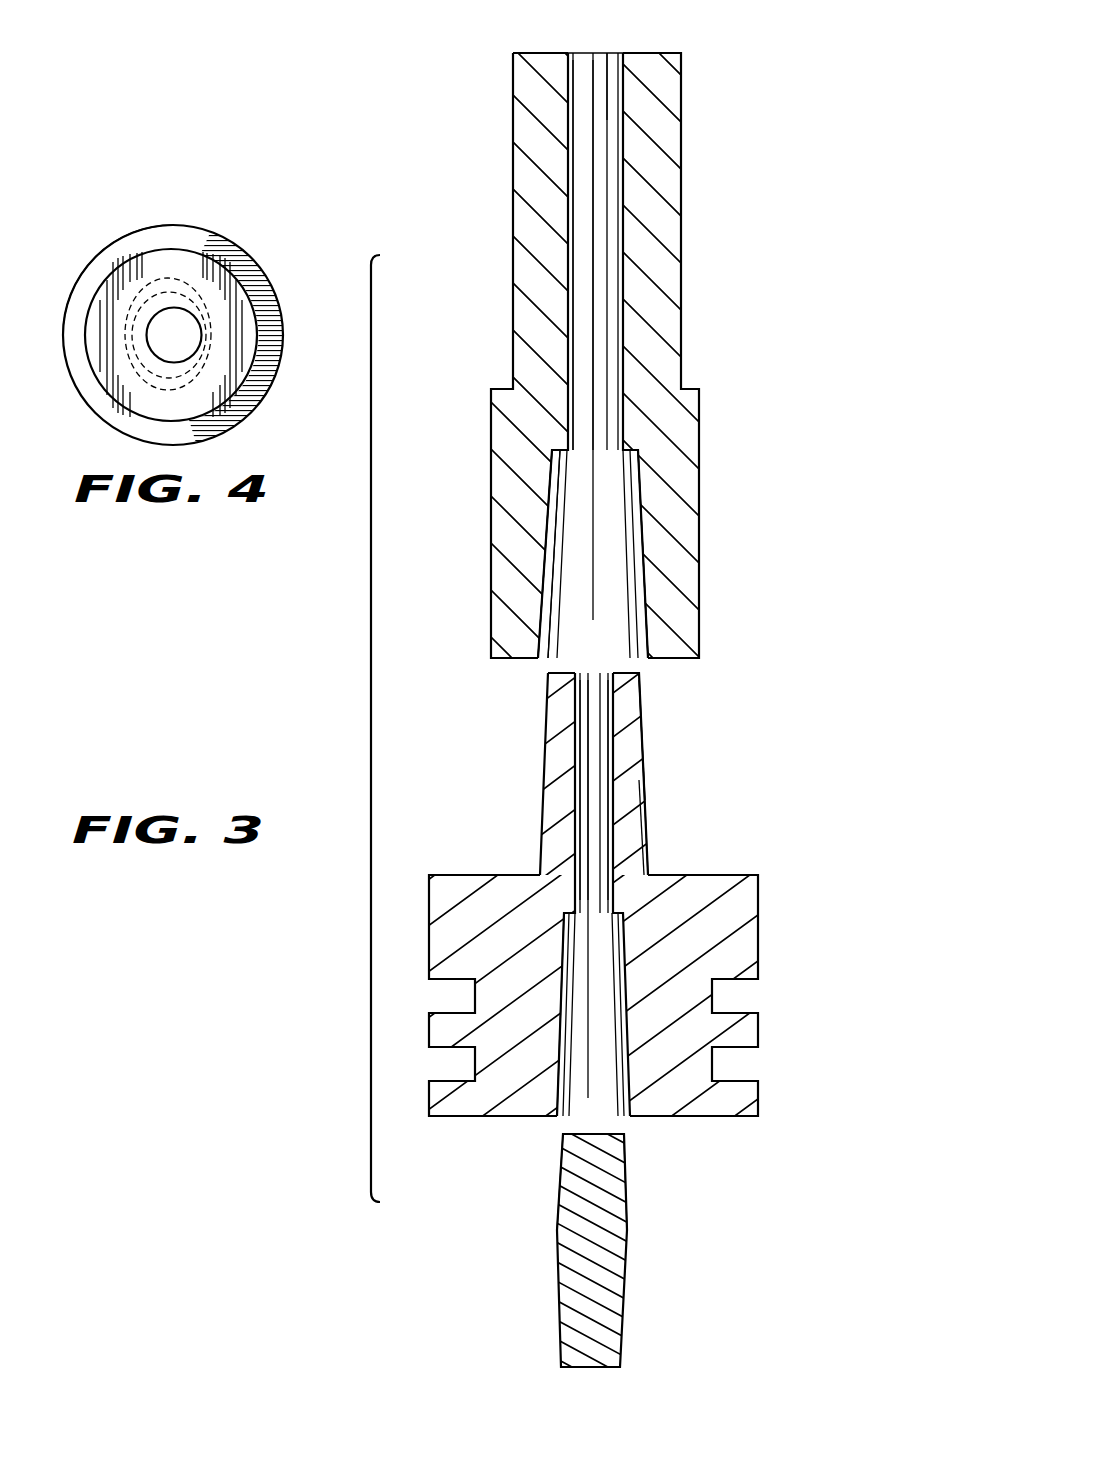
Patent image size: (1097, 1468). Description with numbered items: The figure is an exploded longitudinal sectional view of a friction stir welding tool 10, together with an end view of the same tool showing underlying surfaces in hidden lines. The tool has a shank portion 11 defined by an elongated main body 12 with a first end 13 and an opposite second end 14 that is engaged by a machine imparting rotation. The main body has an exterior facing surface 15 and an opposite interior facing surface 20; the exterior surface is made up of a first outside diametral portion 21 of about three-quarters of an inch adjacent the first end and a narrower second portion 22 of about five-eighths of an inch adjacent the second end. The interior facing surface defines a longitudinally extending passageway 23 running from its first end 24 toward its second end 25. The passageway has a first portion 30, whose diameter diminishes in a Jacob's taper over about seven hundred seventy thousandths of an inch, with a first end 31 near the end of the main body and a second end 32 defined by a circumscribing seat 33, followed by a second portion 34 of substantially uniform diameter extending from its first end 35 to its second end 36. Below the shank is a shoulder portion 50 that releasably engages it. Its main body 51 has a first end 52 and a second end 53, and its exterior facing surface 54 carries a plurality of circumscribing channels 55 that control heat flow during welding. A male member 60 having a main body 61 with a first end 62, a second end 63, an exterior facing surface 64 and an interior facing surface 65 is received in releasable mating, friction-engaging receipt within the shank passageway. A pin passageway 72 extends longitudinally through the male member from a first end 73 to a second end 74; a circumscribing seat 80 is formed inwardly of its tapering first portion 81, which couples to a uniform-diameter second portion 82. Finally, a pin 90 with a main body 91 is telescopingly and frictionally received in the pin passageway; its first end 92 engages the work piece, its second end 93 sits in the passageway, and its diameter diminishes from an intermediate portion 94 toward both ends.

In FIG. 3, the friction stir welding tool 10 is at (371, 728).
In FIG. 4, the friction stir welding tool 10 is at (200, 133).
In FIG. 3, the shank portion 11 is at (706, 312).
In FIG. 4, the shank portion 11 is at (172, 292).
In FIG. 3, the main body 12 is at (668, 232).
In FIG. 3, the first end 13 is at (690, 662).
In FIG. 3, the second end 14 is at (650, 53).
In FIG. 3, the exterior facing surface 15 is at (680, 372).
In FIG. 3, the interior facing surface 20 is at (578, 300).
In FIG. 3, the first outside diametral portion 21 is at (491, 468).
In FIG. 4, the first outside diametral portion 21 is at (140, 280).
In FIG. 3, the second portion 22 is at (513, 150).
In FIG. 4, the second portion 22 is at (167, 292).
In FIG. 3, the longitudinally extending passageway 23 is at (590, 225).
In FIG. 3, the first end of the passageway 24 is at (635, 662).
In FIG. 3, the second end of the passageway 25 is at (605, 55).
In FIG. 3, the first portion of the passageway 30 is at (613, 583).
In FIG. 3, the first end of the first portion 31 is at (546, 645).
In FIG. 3, the second end of the first portion 32 is at (556, 495).
In FIG. 3, the circumscribing seat 33 is at (660, 492).
In FIG. 3, the second portion of the passageway 34 is at (596, 388).
In FIG. 3, the first end of the second portion 35 is at (578, 440).
In FIG. 3, the second end of the second portion 36 is at (578, 60).
In FIG. 3, the shoulder portion 50 is at (351, 995).
In FIG. 3, the main body 51 is at (730, 920).
In FIG. 3, the first end 52 is at (735, 1118).
In FIG. 3, the second end 53 is at (718, 875).
In FIG. 3, the exterior facing surface 54 is at (760, 950).
In FIG. 3, the circumscribing channels 55 is at (751, 1060).
In FIG. 3, the male member 60 is at (511, 793).
In FIG. 3, the main body 61 is at (625, 802).
In FIG. 3, the first end 62 is at (636, 860).
In FIG. 3, the second end 63 is at (556, 700).
In FIG. 3, the exterior facing surface 64 is at (640, 752).
In FIG. 3, the interior facing surface 65 is at (578, 728).
In FIG. 3, the pin passageway 72 is at (576, 1053).
In FIG. 3, the first end of the pin passageway 73 is at (568, 1074).
In FIG. 3, the second end of the pin passageway 74 is at (610, 702).
In FIG. 3, the circumscribing seat 80 is at (566, 918).
In FIG. 3, the first portion of the pin passageway 81 is at (576, 990).
In FIG. 3, the second portion of the pin passageway 82 is at (576, 848).
In FIG. 3, the pin 90 is at (519, 1222).
In FIG. 3, the main body 91 is at (605, 1228).
In FIG. 3, the first end 92 is at (625, 1348).
In FIG. 3, the second end 93 is at (625, 1165).
In FIG. 3, the intermediate portion 94 is at (560, 1247).